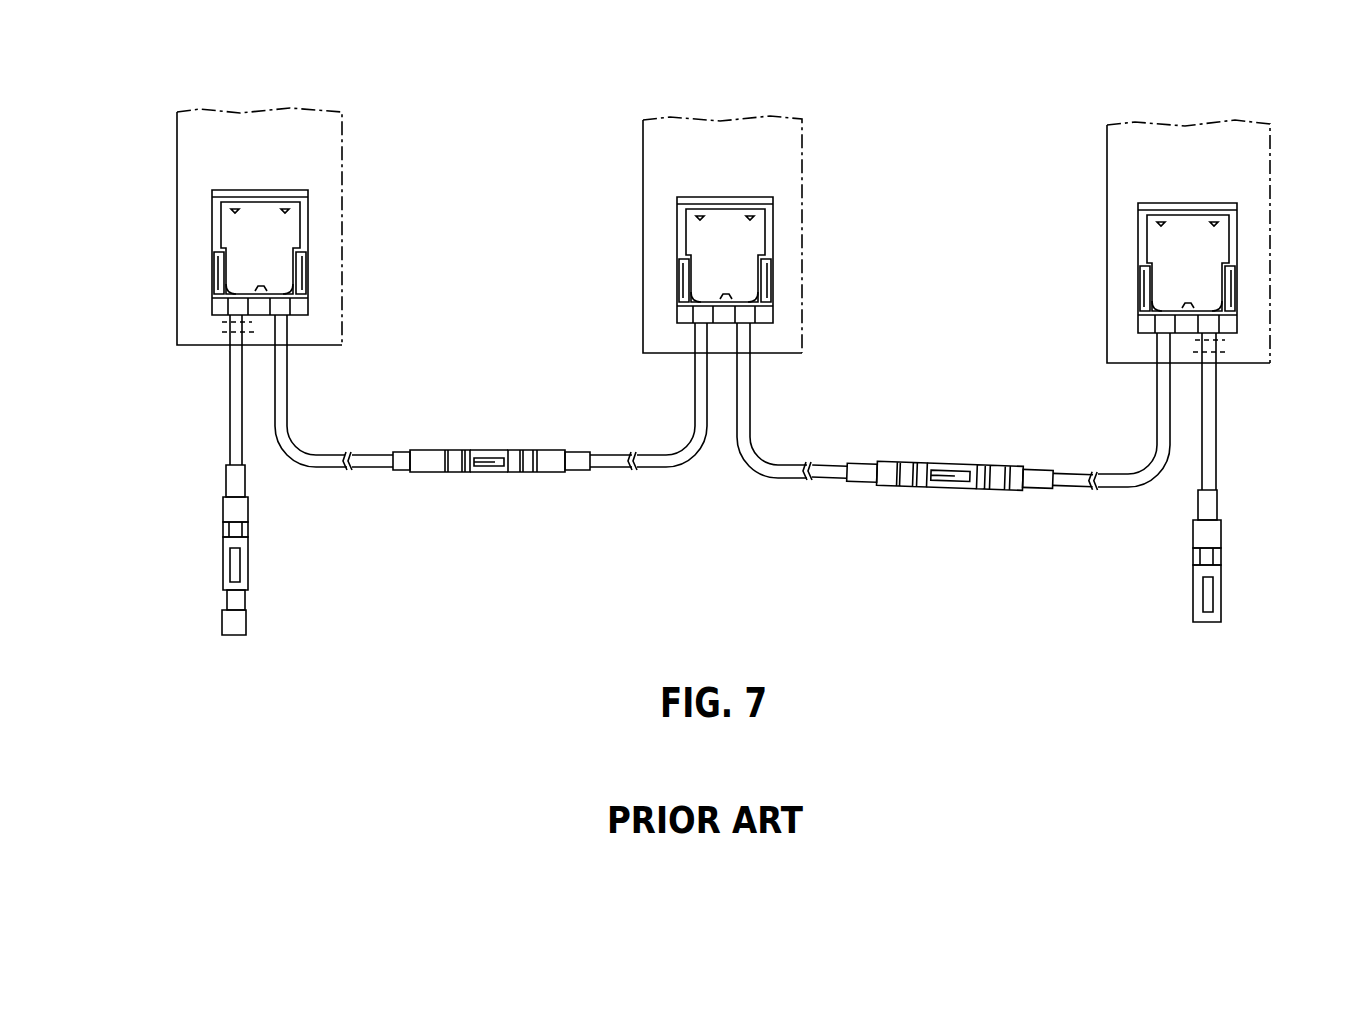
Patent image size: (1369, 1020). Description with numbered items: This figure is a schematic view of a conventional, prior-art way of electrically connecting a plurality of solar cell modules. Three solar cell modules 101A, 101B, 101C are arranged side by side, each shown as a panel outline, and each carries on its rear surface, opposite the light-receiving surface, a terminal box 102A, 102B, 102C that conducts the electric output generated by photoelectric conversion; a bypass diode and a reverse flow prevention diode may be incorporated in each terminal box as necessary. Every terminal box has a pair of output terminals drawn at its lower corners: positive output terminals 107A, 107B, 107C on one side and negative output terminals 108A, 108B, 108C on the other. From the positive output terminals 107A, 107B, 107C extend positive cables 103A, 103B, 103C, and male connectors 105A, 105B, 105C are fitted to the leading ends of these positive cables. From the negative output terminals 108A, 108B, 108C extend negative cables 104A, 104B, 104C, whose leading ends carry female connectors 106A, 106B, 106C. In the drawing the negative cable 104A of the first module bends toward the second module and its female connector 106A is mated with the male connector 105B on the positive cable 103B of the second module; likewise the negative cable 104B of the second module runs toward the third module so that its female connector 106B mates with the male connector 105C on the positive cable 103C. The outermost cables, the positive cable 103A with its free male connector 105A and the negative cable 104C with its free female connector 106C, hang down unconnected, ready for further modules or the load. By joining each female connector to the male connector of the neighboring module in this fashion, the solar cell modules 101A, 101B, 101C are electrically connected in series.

The solar cell module 101A is at (325, 168).
The terminal box 102A is at (222, 229).
The positive cable 103A is at (233, 410).
The negative cable 104A is at (283, 392).
The male connector 105A is at (218, 538).
The female connector 106A is at (430, 478).
The positive output terminal 107A is at (213, 270).
The negative output terminal 108A is at (308, 272).
The solar cell module 101B is at (788, 175).
The terminal box 102B is at (685, 236).
The positive cable 103B is at (698, 400).
The negative cable 104B is at (743, 402).
The male connector 105B is at (548, 482).
The female connector 106B is at (890, 488).
The positive output terminal 107B is at (678, 280).
The negative output terminal 108B is at (773, 278).
The solar cell module 101C is at (1253, 182).
The terminal box 102C is at (1153, 246).
The positive cable 103C is at (1155, 408).
The negative cable 104C is at (1210, 433).
The male connector 105C is at (1006, 490).
The female connector 106C is at (1220, 537).
The positive output terminal 107C is at (1145, 288).
The negative output terminal 108C is at (1240, 288).